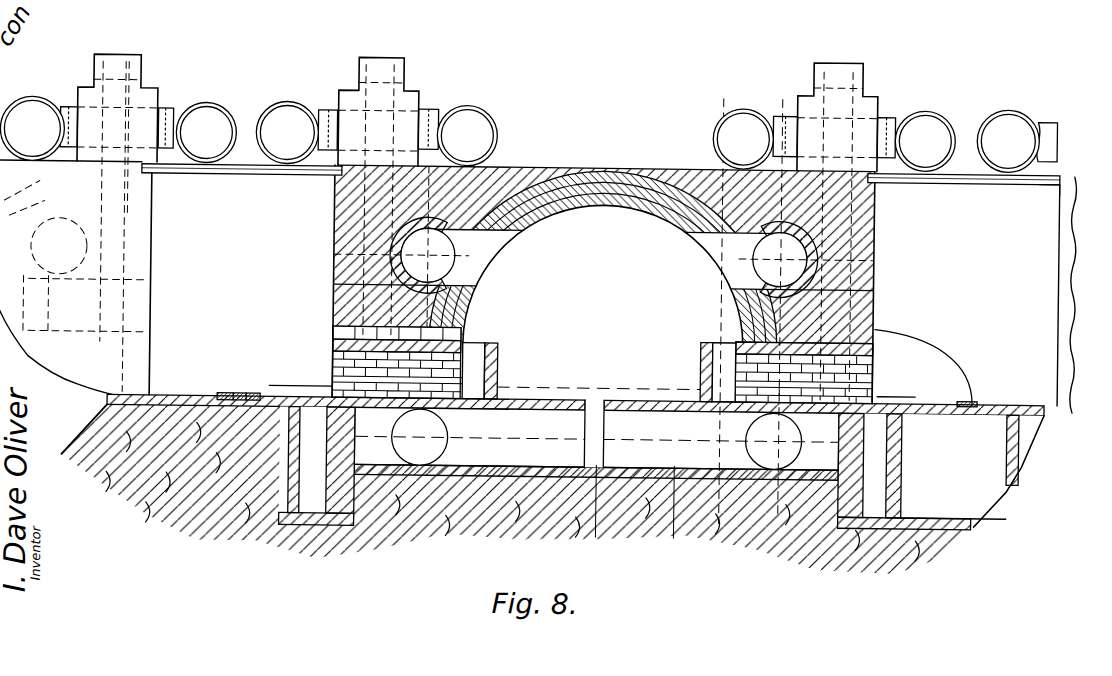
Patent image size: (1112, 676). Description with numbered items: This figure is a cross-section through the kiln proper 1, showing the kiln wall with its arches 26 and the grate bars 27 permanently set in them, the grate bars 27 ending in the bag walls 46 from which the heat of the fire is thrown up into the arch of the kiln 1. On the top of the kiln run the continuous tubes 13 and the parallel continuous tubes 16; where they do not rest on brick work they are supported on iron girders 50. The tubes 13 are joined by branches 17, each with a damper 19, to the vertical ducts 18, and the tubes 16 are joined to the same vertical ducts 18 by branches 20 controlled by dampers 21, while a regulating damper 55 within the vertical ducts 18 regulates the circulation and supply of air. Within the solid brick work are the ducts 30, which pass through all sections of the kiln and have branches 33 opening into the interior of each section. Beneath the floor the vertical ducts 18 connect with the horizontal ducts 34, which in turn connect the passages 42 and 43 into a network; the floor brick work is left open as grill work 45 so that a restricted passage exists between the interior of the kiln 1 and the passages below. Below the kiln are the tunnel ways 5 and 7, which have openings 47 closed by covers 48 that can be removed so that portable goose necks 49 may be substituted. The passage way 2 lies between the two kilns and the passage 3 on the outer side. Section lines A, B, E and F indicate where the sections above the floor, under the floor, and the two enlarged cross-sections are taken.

The kiln proper 1 is at (1078, 295).
The passage way 2 is at (160, 213).
The passage 3 is at (1040, 183).
The tunnel way 5 is at (286, 400).
The tunnel way 7 is at (985, 403).
The continuous tubes 13 is at (203, 105).
The continuous tubes 16 is at (38, 98).
The branches 17 is at (178, 108).
The vertical ducts 18 is at (128, 56).
The damper 19 is at (170, 106).
The branches 20 is at (62, 107).
The dampers 21 is at (68, 106).
The arches 26 is at (345, 330).
The grate bars 27 is at (345, 360).
The ducts 30 is at (395, 236).
The branches 33 is at (481, 266).
The ducts 34 is at (452, 433).
The passages 42 is at (684, 512).
The passages 43 is at (607, 511).
The grill work 45 is at (632, 392).
The bag walls 46 is at (500, 345).
The openings 47 is at (232, 390).
The covers 48 is at (243, 390).
The portable goose necks 49 is at (955, 350).
The iron girders 50 is at (314, 172).
The regulating damper 55 is at (92, 78).
The section line A— A is at (592, 387).
The section line B— B is at (650, 470).
The section line E— E is at (782, 294).
The section line F— F is at (716, 304).